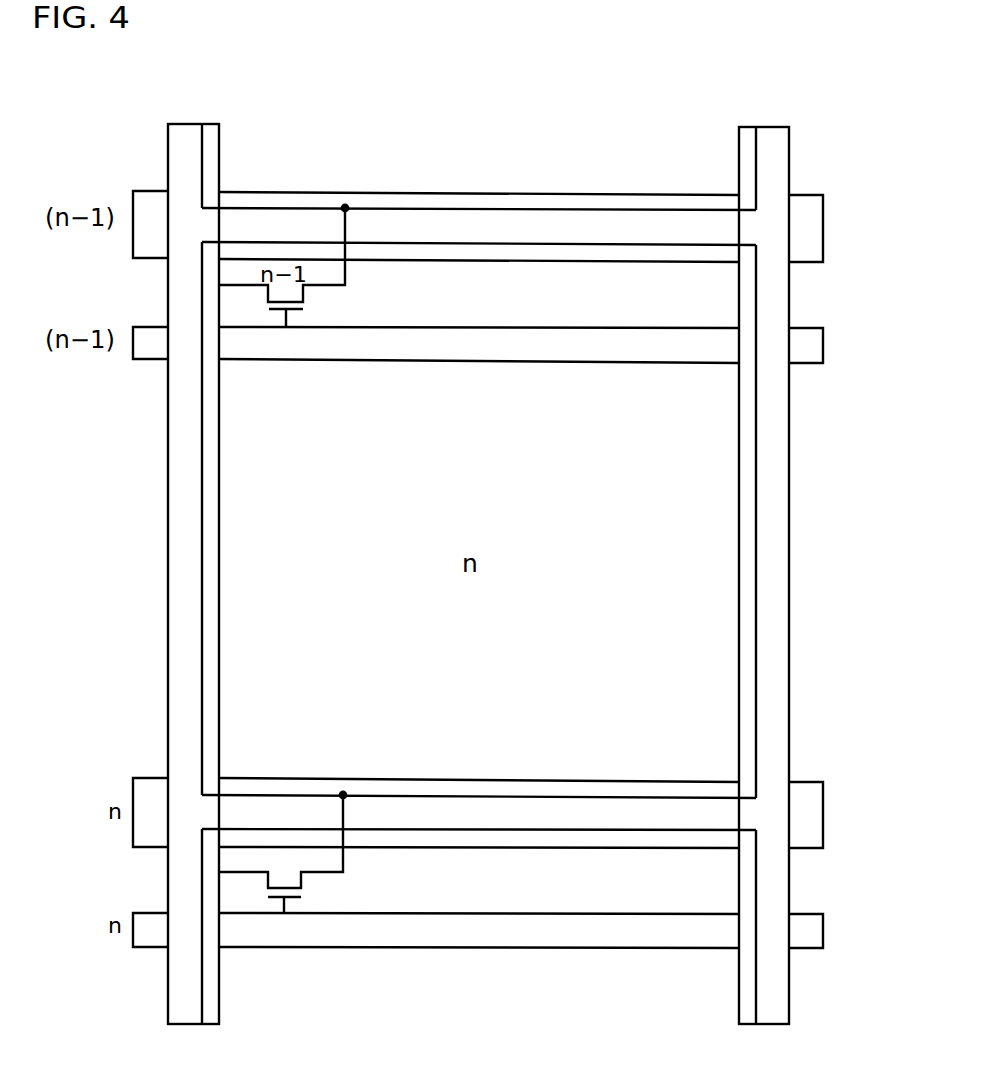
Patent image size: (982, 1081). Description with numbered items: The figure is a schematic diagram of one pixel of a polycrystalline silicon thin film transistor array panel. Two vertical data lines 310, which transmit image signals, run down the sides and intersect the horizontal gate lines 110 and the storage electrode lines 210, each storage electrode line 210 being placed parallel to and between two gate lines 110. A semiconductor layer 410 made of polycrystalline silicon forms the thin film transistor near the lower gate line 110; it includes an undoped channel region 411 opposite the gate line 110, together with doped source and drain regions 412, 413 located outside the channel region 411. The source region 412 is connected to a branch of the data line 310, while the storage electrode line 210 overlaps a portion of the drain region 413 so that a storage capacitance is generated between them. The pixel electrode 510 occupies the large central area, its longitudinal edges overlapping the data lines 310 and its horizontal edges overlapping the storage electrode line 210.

The gate line 110 is at (824, 348).
The storage electrode line 210 is at (824, 228).
The data line 310 is at (167, 995).
The semiconductor layer 410 is at (197, 881).
The channel region 411 is at (268, 898).
The source region 412 is at (238, 873).
The drain region 413 is at (323, 873).
The pixel electrode 510 is at (706, 584).